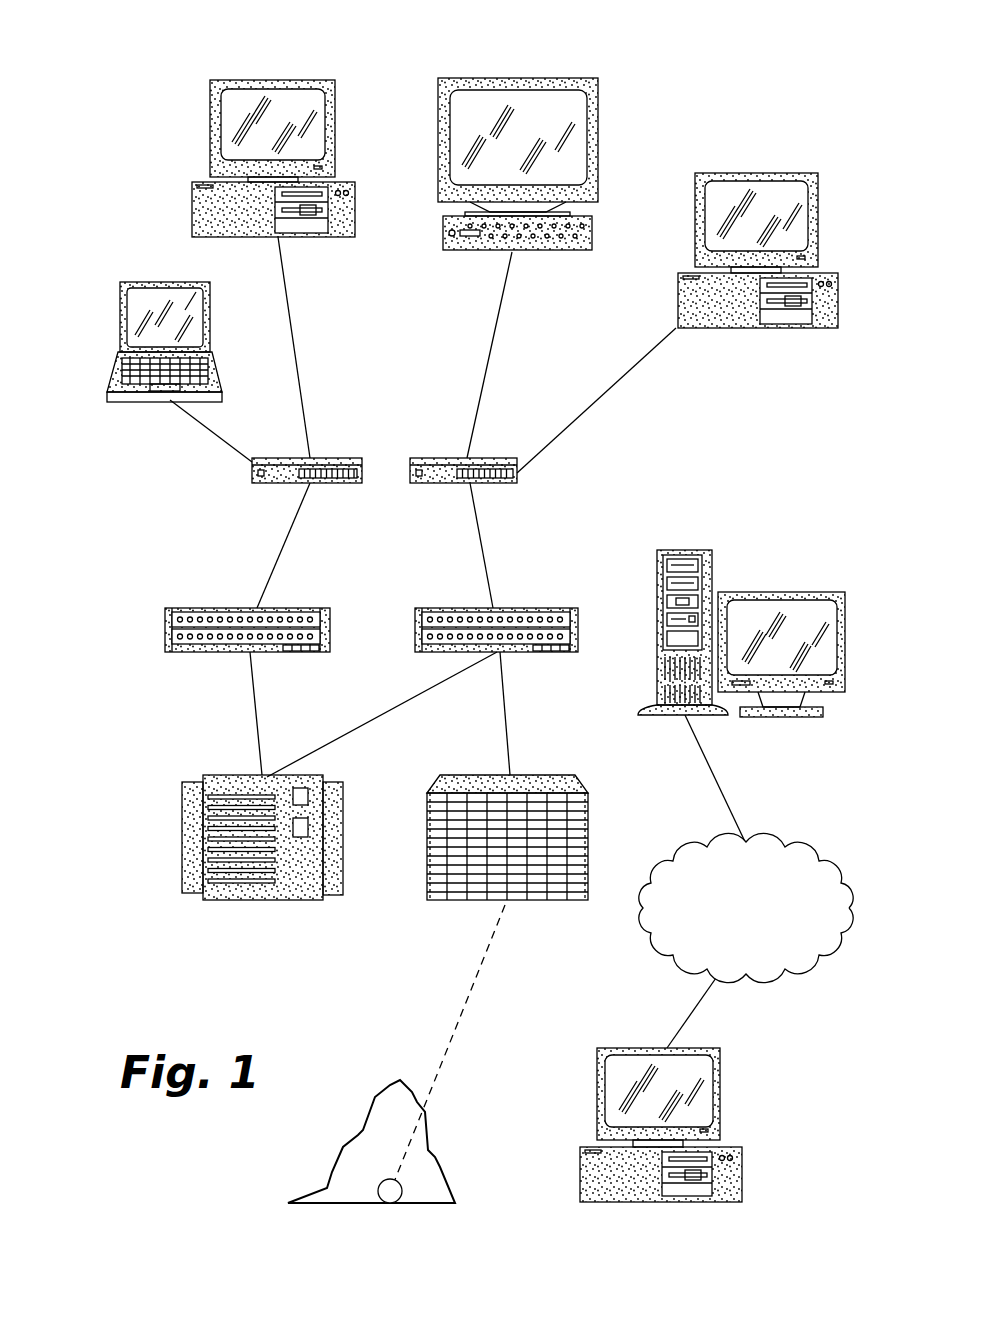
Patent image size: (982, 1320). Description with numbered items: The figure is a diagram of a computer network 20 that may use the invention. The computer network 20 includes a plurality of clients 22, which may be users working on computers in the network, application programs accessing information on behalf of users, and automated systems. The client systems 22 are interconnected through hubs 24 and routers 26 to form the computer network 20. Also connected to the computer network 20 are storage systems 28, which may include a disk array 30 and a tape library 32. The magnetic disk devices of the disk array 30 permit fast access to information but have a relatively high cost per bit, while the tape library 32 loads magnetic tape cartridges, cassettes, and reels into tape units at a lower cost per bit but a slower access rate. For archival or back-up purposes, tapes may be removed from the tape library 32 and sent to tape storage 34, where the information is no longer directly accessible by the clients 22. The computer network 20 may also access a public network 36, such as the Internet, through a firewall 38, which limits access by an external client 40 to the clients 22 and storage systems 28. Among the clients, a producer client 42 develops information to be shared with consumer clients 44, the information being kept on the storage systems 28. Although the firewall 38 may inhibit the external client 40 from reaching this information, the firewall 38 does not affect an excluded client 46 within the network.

The computer network 20 is at (164, 66).
The clients 22 is at (163, 470).
The hubs 24 is at (335, 458).
The routers 26 is at (293, 608).
The storage systems 28 is at (152, 802).
The disk array 30 is at (257, 900).
The tape library 32 is at (450, 900).
The tape storage 34 is at (390, 1082).
The public network 36 is at (768, 848).
The firewall 38 is at (685, 550).
The external client 40 is at (742, 1170).
The producer client 42 is at (278, 80).
The consumer clients 44 is at (525, 78).
The excluded client 46 is at (762, 173).